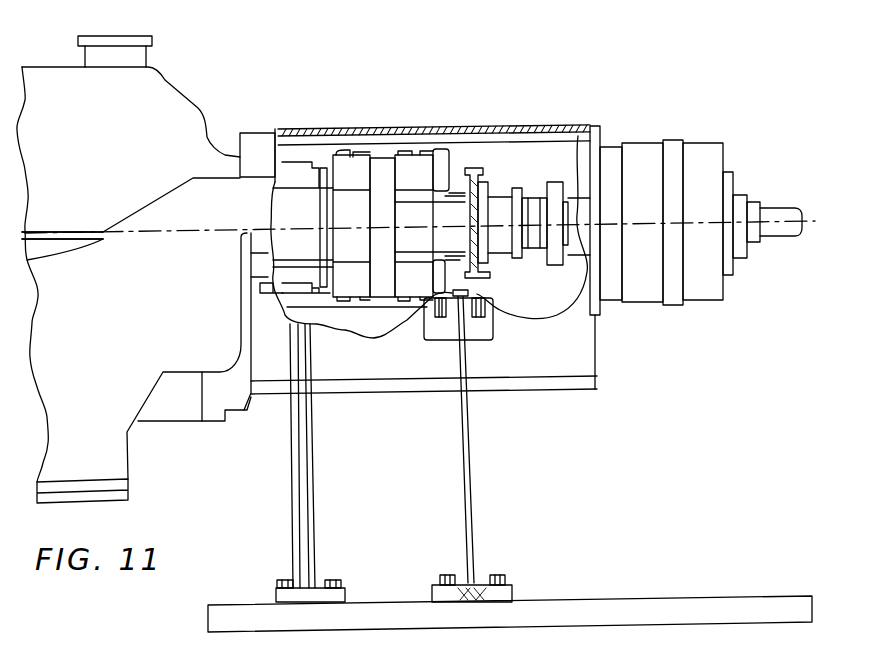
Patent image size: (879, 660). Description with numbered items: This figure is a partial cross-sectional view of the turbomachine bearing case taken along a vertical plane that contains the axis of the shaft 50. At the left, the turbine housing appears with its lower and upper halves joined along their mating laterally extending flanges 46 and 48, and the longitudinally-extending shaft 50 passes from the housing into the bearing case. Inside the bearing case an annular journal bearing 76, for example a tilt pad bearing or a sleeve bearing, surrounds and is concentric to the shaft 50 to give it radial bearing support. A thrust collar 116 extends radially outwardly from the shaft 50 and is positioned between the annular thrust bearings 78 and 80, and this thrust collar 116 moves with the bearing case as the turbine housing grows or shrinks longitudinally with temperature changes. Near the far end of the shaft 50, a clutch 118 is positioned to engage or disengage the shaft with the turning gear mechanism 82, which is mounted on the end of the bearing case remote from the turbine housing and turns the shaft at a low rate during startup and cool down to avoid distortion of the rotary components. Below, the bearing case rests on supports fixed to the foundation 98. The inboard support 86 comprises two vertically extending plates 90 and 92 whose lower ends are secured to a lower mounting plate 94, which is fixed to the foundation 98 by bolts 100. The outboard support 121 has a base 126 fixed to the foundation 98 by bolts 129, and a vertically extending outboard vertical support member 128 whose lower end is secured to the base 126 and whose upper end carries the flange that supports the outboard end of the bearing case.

The laterally extending flange 46 is at (55, 243).
The laterally extending flange 48 is at (56, 231).
The shaft 50 is at (457, 192).
The journal bearing 76 is at (300, 162).
The thrust bearing 78 is at (352, 170).
The thrust bearing 80 is at (410, 170).
The turning gear mechanism 82 is at (708, 301).
The inboard support 86 is at (313, 463).
The vertically extending plate 90 is at (295, 524).
The vertically extending plate 92 is at (312, 524).
The lower mounting plate 94 is at (342, 596).
The foundation 98 is at (708, 597).
The bolts 100 is at (278, 580).
The thrust collar 116 is at (380, 168).
The clutch 118 is at (515, 192).
The outboard support 121 is at (491, 446).
The base 126 is at (514, 590).
The outboard vertical support member 128 is at (476, 512).
The bolts 129 is at (446, 577).